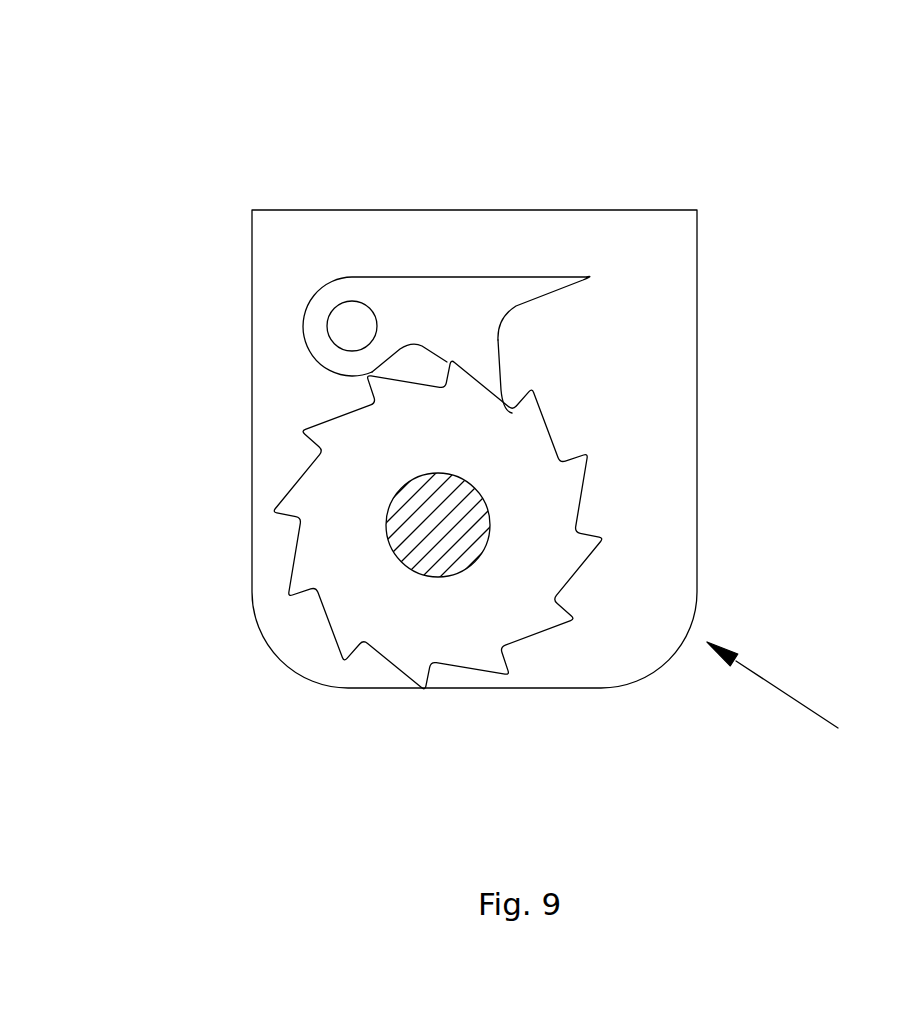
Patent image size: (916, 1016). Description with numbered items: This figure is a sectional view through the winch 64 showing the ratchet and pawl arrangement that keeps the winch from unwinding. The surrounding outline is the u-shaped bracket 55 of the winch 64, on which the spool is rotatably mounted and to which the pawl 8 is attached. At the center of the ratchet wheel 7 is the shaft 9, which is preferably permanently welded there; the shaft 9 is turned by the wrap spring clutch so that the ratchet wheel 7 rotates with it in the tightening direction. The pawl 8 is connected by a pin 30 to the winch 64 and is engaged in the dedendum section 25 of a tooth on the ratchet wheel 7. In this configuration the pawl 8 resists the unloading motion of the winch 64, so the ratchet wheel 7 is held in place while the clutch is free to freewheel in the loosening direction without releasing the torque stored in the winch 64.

The ratchet wheel 7 is at (342, 500).
The pawl 8 is at (445, 316).
The shaft 9 is at (438, 520).
The dedendum section 25 is at (512, 413).
The pin 30 is at (351, 324).
The bracket 55 is at (595, 662).
The winch 64 is at (789, 698).